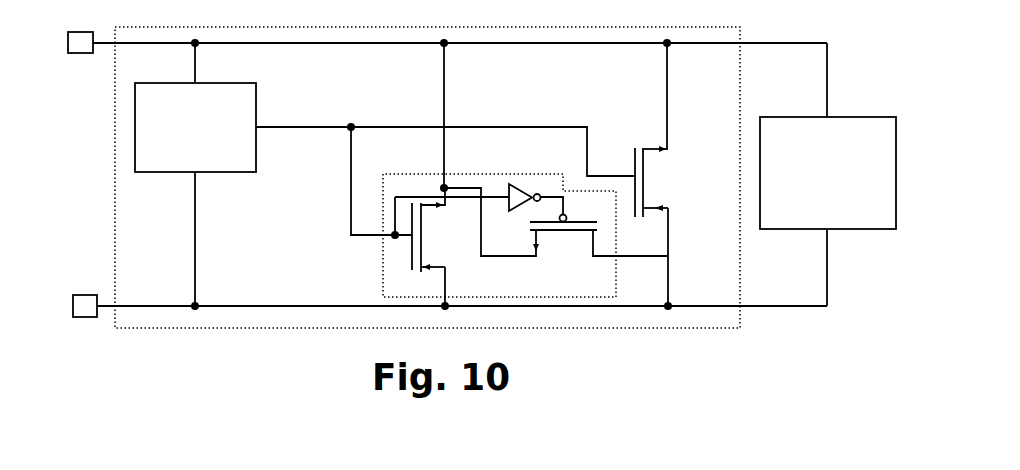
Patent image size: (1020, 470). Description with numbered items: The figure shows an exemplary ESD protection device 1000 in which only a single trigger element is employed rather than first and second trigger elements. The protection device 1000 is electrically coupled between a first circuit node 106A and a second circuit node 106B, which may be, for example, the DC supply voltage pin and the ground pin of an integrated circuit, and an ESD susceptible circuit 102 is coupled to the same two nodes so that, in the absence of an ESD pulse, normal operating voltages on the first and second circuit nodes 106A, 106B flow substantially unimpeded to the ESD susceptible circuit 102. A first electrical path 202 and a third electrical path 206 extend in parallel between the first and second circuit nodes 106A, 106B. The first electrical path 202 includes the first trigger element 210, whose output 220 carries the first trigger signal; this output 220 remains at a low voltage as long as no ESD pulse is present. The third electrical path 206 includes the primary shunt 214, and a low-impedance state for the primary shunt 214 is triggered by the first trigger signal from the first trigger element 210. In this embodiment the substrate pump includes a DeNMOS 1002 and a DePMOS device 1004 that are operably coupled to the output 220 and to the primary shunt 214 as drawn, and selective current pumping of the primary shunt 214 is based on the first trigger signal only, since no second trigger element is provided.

The ESD protection circuit 1000 is at (113, 172).
The first circuit node 106A is at (84, 35).
The second circuit node 106B is at (84, 297).
The first electrical path 202 is at (208, 60).
The first trigger element 210 is at (195, 127).
The output of first trigger element 220 is at (260, 125).
The third electrical path 206 is at (680, 61).
The primary shunt 214 is at (677, 160).
The DeNMOS 1002 is at (394, 262).
The DePMOS device 1004 is at (556, 266).
The ESD susceptible circuit 102 is at (828, 173).